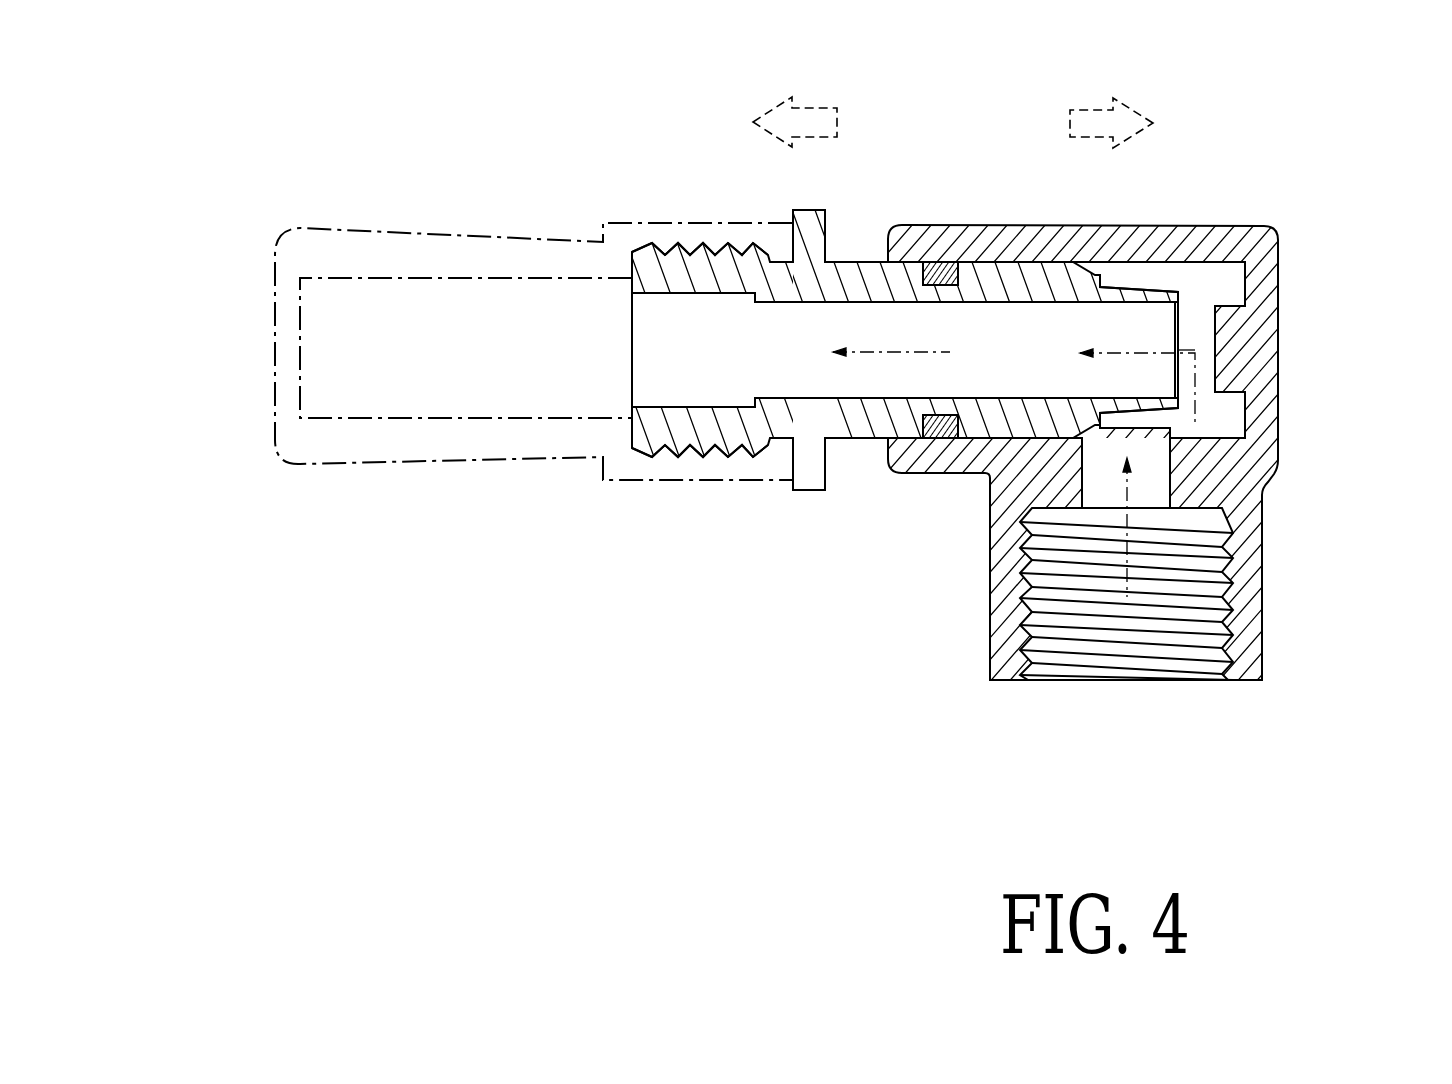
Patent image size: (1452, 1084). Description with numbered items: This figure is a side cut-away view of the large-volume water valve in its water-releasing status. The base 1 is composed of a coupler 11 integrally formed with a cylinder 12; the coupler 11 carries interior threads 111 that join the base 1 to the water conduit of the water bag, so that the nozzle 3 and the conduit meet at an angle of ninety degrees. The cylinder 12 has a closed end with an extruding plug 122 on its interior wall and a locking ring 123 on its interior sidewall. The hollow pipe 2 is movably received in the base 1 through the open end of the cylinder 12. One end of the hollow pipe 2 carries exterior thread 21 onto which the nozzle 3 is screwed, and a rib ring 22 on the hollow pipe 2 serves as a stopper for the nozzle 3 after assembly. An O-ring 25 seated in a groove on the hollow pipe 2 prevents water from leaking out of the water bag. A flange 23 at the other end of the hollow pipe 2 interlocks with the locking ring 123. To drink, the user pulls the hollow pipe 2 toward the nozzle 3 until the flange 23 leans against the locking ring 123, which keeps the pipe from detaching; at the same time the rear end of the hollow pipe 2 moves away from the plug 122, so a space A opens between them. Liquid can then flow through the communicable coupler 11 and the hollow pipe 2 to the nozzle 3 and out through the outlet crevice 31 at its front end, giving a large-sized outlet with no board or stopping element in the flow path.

The base 1 is at (963, 444).
The coupler 11 is at (1127, 625).
The interior threads 111 is at (1233, 640).
The cylinder 12 is at (1109, 378).
The plug 122 is at (1224, 305).
The locking ring 123 is at (1070, 438).
The hollow pipe 2 is at (925, 425).
The exterior thread 21 is at (707, 447).
The rib ring 22 is at (812, 210).
The flange 23 is at (1062, 415).
The O-ring 25 is at (942, 262).
The nozzle 3 is at (464, 290).
The outlet crevice 31 is at (300, 346).
The space A is at (1197, 337).